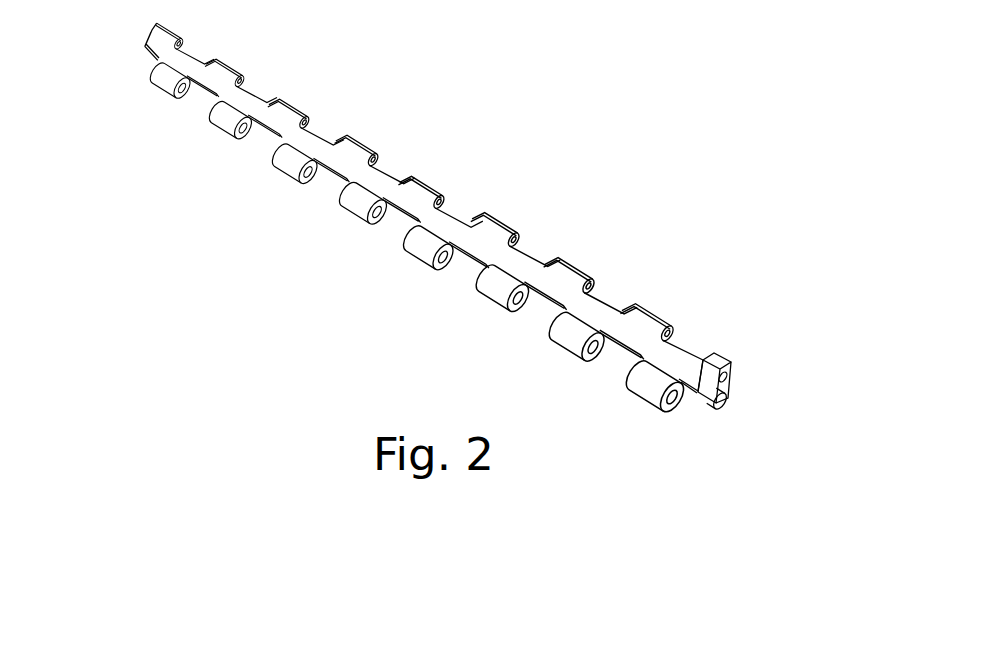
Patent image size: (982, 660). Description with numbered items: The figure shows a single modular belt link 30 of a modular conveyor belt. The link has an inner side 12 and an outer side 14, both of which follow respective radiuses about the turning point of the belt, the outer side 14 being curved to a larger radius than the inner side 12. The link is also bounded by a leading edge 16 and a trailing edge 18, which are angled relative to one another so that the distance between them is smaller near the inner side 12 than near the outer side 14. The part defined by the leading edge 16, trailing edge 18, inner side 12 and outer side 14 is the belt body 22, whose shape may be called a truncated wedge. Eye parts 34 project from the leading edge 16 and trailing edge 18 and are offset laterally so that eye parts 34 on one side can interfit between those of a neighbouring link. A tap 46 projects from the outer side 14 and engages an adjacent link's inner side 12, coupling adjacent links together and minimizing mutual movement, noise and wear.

The inner side 12 is at (155, 33).
The outer side 14 is at (730, 383).
The leading edge 16 is at (519, 263).
The trailing edge 18 is at (623, 352).
The belt body 22 is at (375, 180).
The modular belt link 30 is at (514, 179).
The eye parts 34 is at (653, 312).
The tap 46 is at (720, 412).